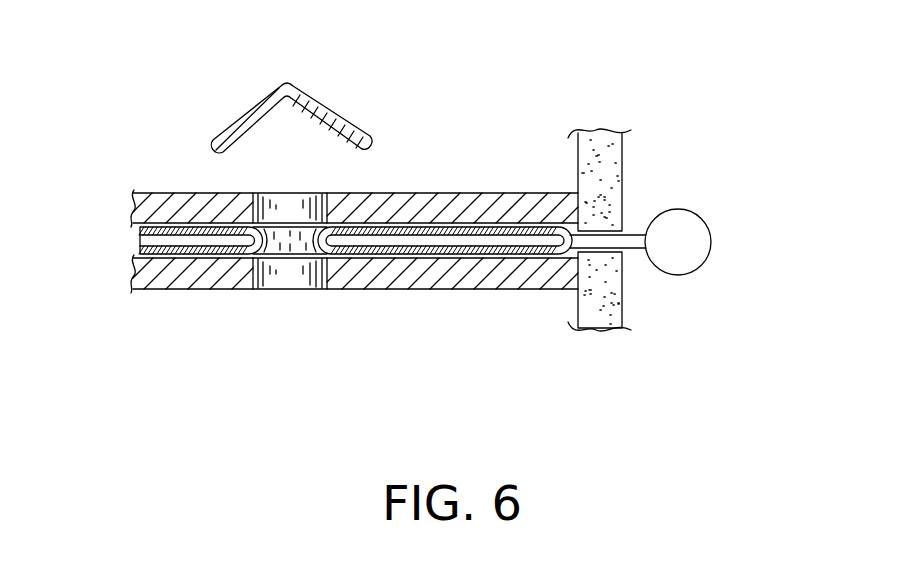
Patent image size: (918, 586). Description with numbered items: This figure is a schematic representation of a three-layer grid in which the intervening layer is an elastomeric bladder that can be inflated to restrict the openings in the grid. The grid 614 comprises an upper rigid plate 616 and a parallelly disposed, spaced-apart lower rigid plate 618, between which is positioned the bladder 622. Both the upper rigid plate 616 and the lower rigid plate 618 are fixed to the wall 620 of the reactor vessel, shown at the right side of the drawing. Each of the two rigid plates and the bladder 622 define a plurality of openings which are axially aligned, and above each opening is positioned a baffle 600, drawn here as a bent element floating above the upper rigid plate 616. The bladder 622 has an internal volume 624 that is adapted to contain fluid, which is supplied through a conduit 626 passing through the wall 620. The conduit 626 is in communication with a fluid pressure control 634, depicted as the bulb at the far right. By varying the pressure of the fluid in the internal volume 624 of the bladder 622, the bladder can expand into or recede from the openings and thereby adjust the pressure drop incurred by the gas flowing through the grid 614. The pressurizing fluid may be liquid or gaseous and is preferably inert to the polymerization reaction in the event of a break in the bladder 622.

The baffle 600 is at (345, 122).
The grid 614 is at (165, 117).
The upper rigid plate 616 is at (158, 193).
The lower rigid plate 618 is at (150, 289).
The wall 620 is at (625, 168).
The bladder 622 is at (310, 256).
The internal volume 624 is at (498, 244).
The conduit 626 is at (638, 253).
The fluid pressure control 634 is at (712, 240).